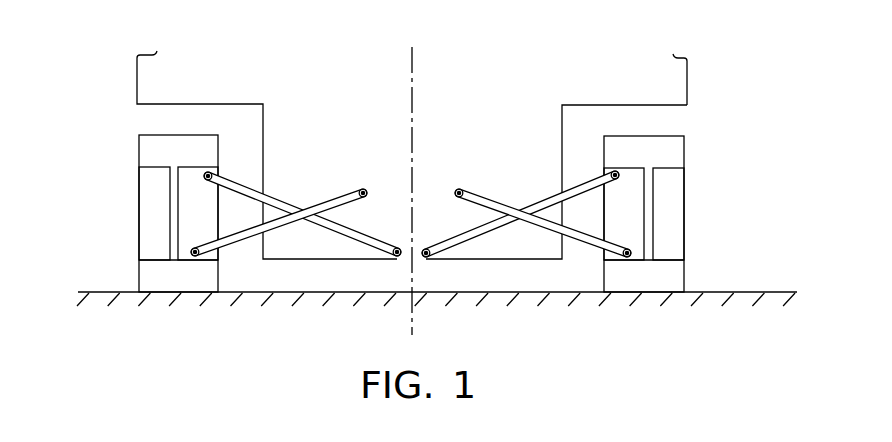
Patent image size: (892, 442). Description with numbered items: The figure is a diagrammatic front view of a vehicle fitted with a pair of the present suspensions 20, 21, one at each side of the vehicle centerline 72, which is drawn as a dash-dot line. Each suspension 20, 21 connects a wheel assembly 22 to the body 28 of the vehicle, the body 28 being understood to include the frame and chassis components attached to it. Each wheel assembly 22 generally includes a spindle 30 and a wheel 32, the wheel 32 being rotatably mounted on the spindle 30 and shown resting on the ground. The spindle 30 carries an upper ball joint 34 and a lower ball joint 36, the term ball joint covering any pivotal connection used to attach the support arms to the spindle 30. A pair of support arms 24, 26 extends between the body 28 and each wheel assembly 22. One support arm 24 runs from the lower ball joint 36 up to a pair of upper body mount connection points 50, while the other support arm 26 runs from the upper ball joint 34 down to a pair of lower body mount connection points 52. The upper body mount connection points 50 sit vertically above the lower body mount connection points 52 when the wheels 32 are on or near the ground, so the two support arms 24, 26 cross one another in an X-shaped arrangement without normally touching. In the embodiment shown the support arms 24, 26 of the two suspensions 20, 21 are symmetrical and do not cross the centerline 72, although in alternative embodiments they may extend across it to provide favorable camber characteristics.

The suspension 20 is at (273, 167).
The suspension 21 is at (484, 167).
The wheel assembly 22 is at (151, 228).
The support arm 24 is at (262, 229).
The support arm 26 is at (281, 203).
The body of the vehicle 28 is at (687, 80).
The spindle 30 is at (185, 202).
The wheel 32 is at (148, 272).
The upper ball joint 34 is at (207, 172).
The lower ball joint 36 is at (194, 254).
The upper body mount connection points 50 is at (364, 191).
The lower body mount connection points 52 is at (397, 260).
The centerline 72 is at (414, 78).